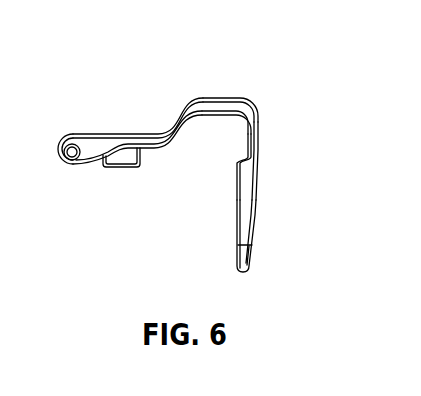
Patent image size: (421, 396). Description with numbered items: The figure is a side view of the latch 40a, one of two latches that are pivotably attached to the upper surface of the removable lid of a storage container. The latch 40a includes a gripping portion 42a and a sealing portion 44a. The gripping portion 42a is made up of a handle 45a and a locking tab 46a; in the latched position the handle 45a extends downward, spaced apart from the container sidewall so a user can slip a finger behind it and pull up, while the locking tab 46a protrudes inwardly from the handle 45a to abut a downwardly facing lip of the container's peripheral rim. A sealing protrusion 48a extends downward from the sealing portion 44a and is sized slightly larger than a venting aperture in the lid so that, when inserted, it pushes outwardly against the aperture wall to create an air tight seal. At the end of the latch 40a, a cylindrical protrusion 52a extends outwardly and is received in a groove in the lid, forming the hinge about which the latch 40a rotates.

The latch 40a is at (191, 69).
The gripping portion 42a is at (257, 115).
The sealing portion 44a is at (95, 147).
The handle 45a is at (259, 181).
The locking tab 46a is at (237, 204).
The sealing protrusion 48a is at (118, 160).
The cylindrical protrusion 52a is at (70, 167).